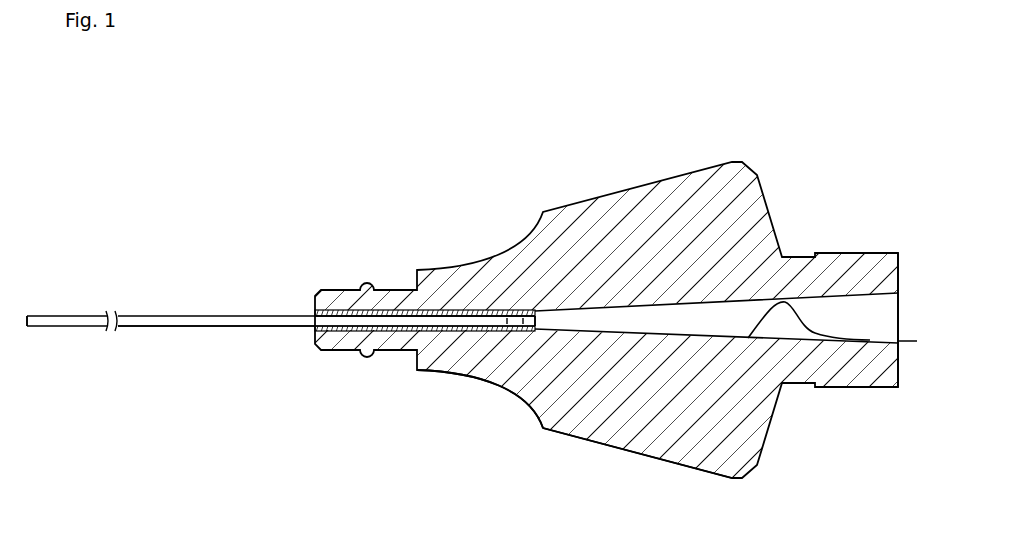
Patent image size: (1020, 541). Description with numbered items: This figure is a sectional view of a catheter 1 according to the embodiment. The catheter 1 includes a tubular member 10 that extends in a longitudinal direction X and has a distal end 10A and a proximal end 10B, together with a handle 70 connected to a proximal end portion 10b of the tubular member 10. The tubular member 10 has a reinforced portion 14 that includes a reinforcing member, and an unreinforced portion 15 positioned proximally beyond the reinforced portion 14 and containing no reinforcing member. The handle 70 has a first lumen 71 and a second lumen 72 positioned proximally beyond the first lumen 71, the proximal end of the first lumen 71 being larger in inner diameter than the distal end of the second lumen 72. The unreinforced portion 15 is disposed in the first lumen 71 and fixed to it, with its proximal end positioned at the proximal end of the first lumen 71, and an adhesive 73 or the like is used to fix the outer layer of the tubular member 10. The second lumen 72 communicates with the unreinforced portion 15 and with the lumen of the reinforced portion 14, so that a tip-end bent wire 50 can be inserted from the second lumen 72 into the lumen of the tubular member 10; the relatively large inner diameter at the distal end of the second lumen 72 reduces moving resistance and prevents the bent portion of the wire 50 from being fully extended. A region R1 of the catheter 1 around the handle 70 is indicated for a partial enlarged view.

The catheter 1 is at (530, 99).
The tubular member 10 is at (175, 316).
The distal end 10A is at (25, 317).
The proximal end 10B is at (537, 311).
The proximal end portion 10b is at (333, 310).
The reinforced portion 14 is at (288, 326).
The unreinforced portion 15 is at (533, 309).
The tip-end bent wire 50 is at (912, 345).
The handle 70 is at (650, 183).
The first lumen 71 is at (485, 330).
The second lumen 72 is at (589, 333).
The adhesive 73 is at (385, 310).
The region R1 is at (553, 487).
The longitudinal direction X is at (288, 216).